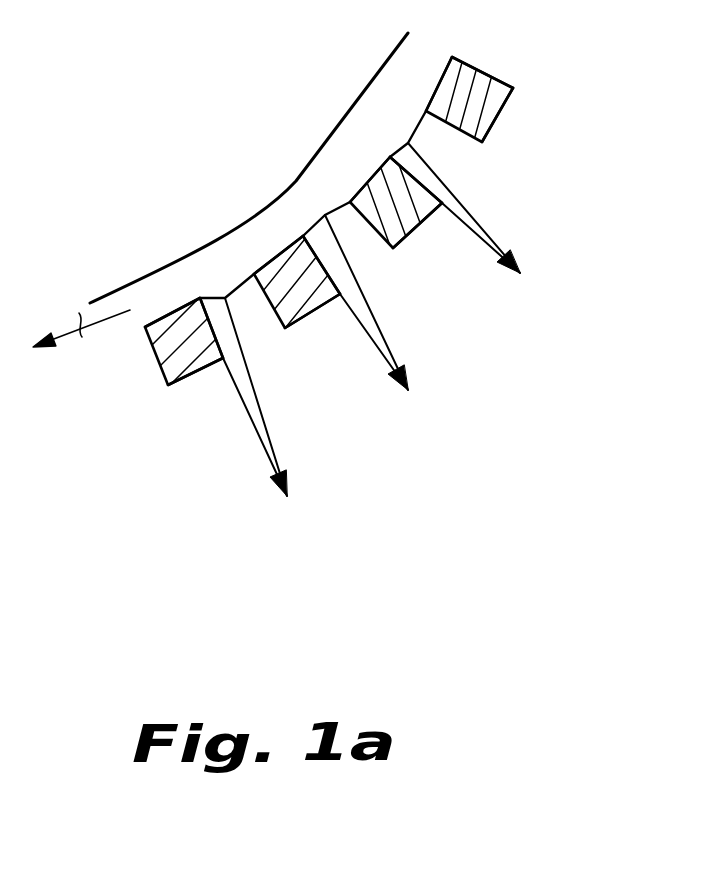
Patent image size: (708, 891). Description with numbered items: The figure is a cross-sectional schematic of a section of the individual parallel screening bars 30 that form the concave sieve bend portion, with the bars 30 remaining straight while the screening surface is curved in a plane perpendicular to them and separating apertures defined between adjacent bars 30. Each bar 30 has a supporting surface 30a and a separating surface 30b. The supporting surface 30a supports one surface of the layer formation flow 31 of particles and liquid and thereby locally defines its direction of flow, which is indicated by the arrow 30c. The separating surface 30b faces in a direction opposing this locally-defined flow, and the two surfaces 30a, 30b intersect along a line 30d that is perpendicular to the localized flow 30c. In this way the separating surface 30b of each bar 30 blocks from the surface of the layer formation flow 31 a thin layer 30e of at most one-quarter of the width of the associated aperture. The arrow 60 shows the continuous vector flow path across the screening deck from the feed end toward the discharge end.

The layer formation flow 31 is at (375, 87).
The screening bar 30 is at (485, 143).
The supporting surface 30a is at (452, 58).
The separating surface 30b is at (491, 79).
The localized direction of flow 30c is at (418, 97).
The intersection line 30d is at (454, 57).
The thin layer 30e is at (448, 205).
The continuous vector flow path 60 is at (80, 317).